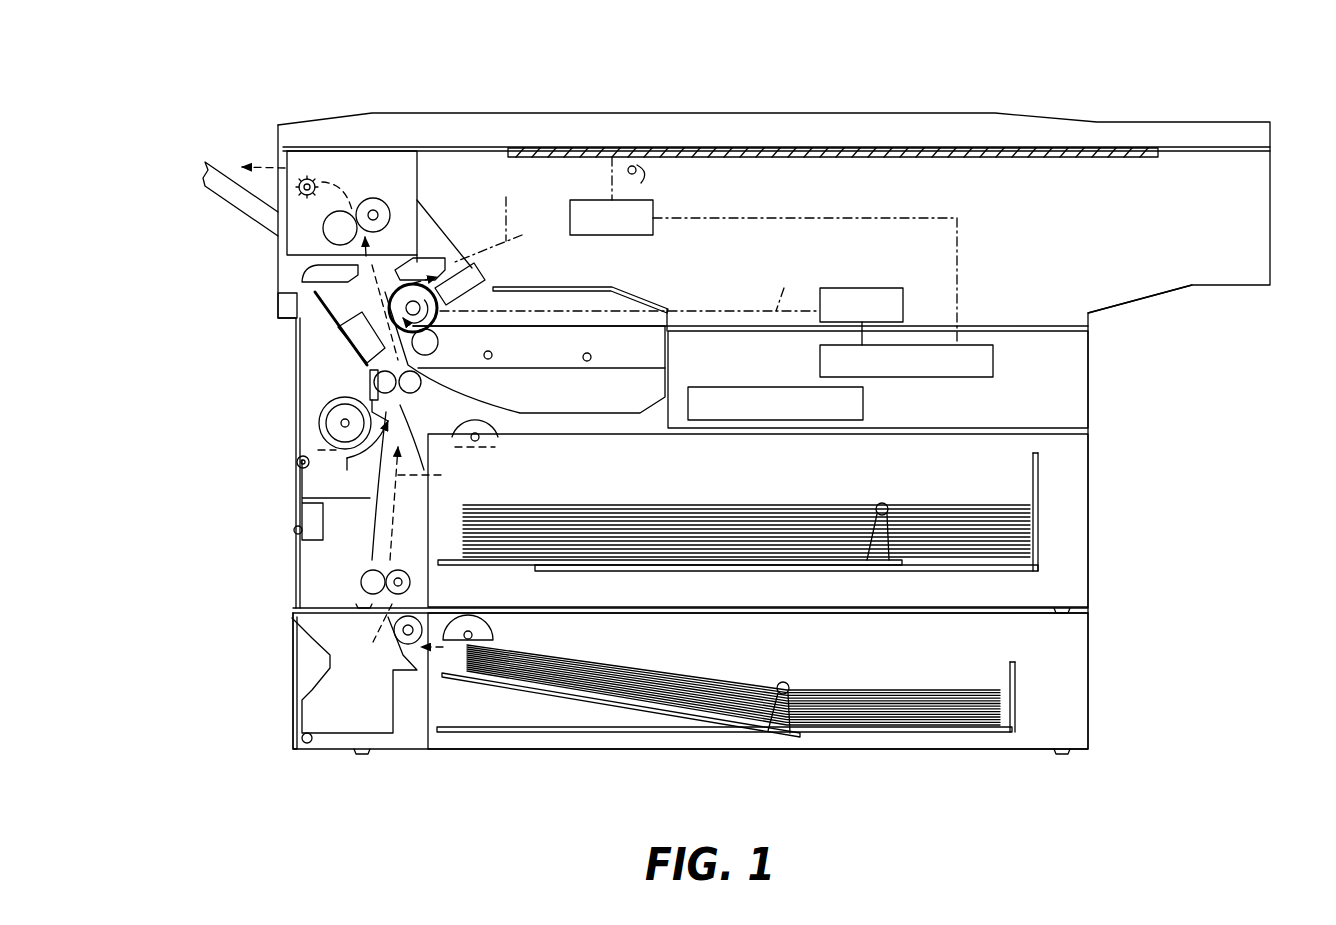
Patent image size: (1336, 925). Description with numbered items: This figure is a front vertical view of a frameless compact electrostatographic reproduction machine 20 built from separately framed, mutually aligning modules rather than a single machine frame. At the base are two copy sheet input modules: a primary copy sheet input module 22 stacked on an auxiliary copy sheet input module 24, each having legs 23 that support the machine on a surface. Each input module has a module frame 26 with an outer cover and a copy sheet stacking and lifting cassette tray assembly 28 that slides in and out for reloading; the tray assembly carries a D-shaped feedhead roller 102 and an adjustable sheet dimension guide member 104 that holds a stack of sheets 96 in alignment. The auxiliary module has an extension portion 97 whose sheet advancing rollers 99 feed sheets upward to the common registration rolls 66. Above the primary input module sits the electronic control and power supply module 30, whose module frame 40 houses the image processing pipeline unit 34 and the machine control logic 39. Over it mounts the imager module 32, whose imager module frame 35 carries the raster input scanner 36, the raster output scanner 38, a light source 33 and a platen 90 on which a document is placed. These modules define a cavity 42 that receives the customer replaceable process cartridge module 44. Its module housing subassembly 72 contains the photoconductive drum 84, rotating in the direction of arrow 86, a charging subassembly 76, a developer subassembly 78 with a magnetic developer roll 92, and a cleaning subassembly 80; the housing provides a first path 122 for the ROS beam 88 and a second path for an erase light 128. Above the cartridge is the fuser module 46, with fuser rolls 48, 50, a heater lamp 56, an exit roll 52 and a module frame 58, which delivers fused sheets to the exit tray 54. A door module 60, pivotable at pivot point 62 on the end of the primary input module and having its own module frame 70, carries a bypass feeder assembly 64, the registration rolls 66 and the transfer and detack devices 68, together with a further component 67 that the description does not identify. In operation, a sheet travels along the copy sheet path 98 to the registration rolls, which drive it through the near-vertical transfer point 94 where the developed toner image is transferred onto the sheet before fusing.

The compact electrostatographic reproduction machine 20 is at (732, 60).
The copy sheet input module 22 is at (915, 468).
The legs 23 is at (358, 605).
The auxiliary copy sheet input module 24 is at (915, 660).
The module frame 26 is at (294, 575).
The copy sheet stacking and lifting cassette tray assembly 28 is at (583, 567).
The electronic control and power supply module 30 is at (917, 418).
The imager module 32 is at (1130, 236).
The light source 33 is at (644, 175).
The image processing pipeline unit 34 is at (917, 375).
The imager module frame 35 is at (1118, 300).
The Raster Input Scanner 36 is at (621, 230).
The Raster Output Scanner 38 is at (872, 318).
The machine control logic 39 is at (788, 418).
The module frame 40 is at (1090, 416).
The cavity 42 is at (627, 418).
The process cartridge module 44 is at (571, 282).
The fuser module 46 is at (262, 153).
The fuser roll 48 is at (367, 199).
The fuser roll 50 is at (326, 238).
The exit roll 52 is at (308, 178).
The exit tray 54 is at (240, 205).
The heater lamp 56 is at (378, 214).
The module frame 58 is at (420, 229).
The door module 60 is at (266, 427).
The pivot point 62 is at (294, 533).
The bypass feeder assembly 64 is at (308, 442).
The registration rolls 66 is at (372, 382).
The fuser roller 67 is at (321, 414).
The toner image transfer and detack devices 68 is at (372, 313).
The module frame 70 is at (296, 483).
The module housing subassembly 72 is at (668, 302).
The charging subassembly 76 is at (481, 281).
The developer subassembly 78 is at (650, 381).
The cleaning subassembly 80 is at (335, 272).
The photoconductive drum 84 is at (405, 277).
The arrow 86 is at (437, 319).
The ROS beam 88 is at (786, 285).
The platen 90 is at (915, 158).
The developer roll 92 is at (439, 347).
The image transfer point 94 is at (360, 294).
The stack of sheets 96 is at (678, 505).
The extension portion 97 is at (357, 676).
The copy sheet path 98 is at (420, 482).
The sheet advancing rollers 99 is at (412, 583).
The D-shaped feedhead roller 102 is at (498, 432).
The adjustable sheet dimension guide member 104 is at (878, 504).
The first path 122 is at (650, 319).
The erase light 128 is at (468, 227).